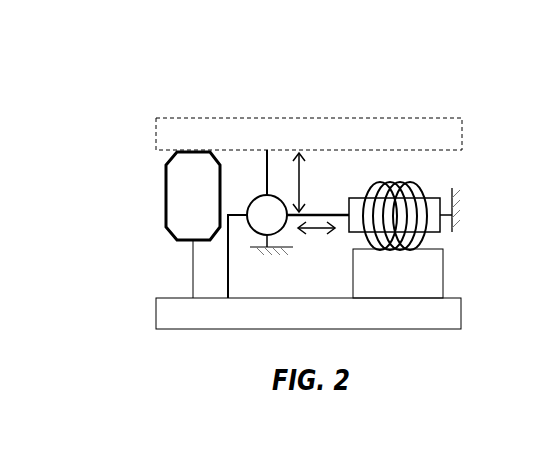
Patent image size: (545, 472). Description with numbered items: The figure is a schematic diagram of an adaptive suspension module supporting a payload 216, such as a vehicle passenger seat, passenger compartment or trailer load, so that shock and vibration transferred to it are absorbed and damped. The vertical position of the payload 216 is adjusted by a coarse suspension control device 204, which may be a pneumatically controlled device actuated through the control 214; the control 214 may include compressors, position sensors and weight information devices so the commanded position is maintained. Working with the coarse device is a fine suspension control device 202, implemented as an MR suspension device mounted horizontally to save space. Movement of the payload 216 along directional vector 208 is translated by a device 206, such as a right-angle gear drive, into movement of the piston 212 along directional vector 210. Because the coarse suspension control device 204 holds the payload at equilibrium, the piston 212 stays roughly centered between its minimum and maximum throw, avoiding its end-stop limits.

The fine suspension control device 202 is at (435, 197).
The coarse suspension control device 204 is at (166, 184).
The device 206 is at (253, 201).
The directional vector 208 is at (303, 196).
The directional vector 210 is at (318, 234).
The piston 212 is at (322, 212).
The control 214 is at (187, 331).
The payload 216 is at (237, 118).